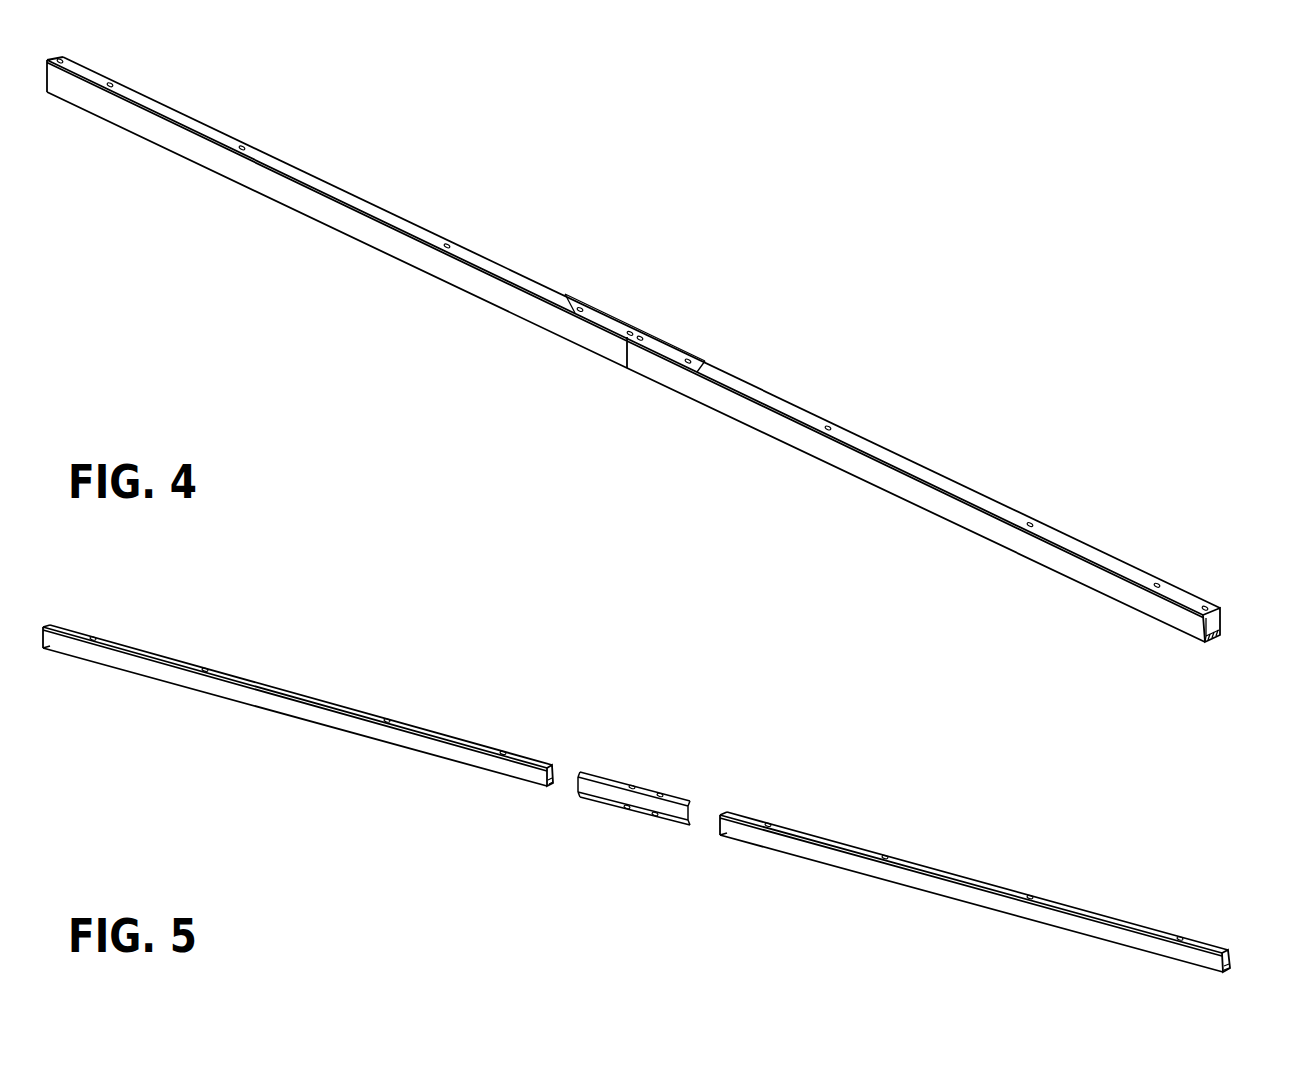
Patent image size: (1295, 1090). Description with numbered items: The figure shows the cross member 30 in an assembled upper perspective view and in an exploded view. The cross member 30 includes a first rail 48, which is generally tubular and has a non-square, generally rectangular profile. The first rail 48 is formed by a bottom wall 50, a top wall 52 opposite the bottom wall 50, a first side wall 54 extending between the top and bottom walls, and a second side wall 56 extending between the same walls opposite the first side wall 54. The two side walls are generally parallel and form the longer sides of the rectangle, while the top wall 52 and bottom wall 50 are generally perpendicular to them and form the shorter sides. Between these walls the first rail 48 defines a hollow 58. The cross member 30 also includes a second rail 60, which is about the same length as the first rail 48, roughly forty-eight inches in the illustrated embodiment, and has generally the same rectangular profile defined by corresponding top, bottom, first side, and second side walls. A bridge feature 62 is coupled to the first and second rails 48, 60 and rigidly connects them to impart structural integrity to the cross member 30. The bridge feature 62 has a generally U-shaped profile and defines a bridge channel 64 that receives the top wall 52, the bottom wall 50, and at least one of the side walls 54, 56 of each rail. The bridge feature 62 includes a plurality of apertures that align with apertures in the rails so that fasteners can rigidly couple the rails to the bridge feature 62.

In FIG. 4, the cross member 30 is at (524, 183).
In FIG. 5, the cross member 30 is at (539, 670).
In FIG. 4, the first rail 48 is at (270, 150).
In FIG. 5, the first rail 48 is at (187, 660).
In FIG. 4, the bottom wall 50 is at (1210, 645).
In FIG. 5, the bottom wall 50 is at (552, 787).
In FIG. 4, the top wall 52 is at (394, 214).
In FIG. 5, the top wall 52 is at (337, 703).
In FIG. 4, the first side wall 54 is at (313, 206).
In FIG. 5, the first side wall 54 is at (302, 712).
In FIG. 4, the second side wall 56 is at (1214, 631).
In FIG. 5, the second side wall 56 is at (557, 770).
In FIG. 4, the hollow 58 is at (1224, 617).
In FIG. 4, the second rail 60 is at (801, 402).
In FIG. 5, the second rail 60 is at (830, 836).
In FIG. 4, the bridge feature 62 is at (616, 309).
In FIG. 5, the bridge feature 62 is at (618, 771).
In FIG. 5, the bridge channel 64 is at (654, 809).